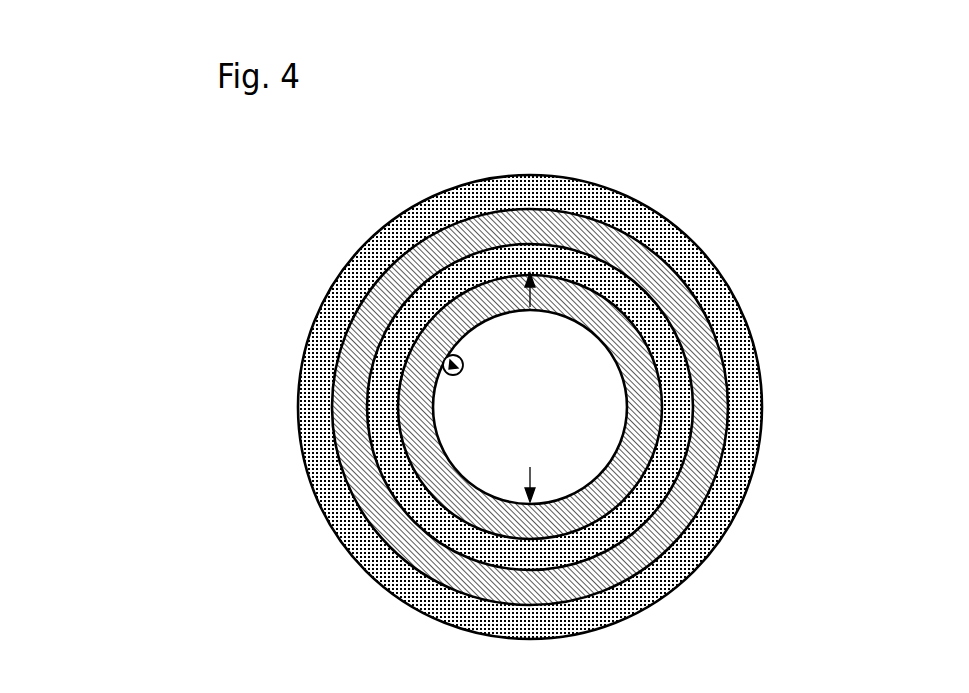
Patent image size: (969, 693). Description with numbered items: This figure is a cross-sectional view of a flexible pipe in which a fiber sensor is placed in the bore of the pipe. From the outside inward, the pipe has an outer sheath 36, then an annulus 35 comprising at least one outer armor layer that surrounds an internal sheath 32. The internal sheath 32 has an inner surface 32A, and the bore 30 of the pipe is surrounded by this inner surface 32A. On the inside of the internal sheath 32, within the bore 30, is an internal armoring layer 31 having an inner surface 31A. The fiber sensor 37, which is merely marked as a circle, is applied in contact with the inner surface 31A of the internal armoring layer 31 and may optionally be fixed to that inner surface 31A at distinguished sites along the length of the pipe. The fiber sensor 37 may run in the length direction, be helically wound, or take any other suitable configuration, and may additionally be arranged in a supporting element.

The bore 30 is at (498, 408).
The internal armoring layer 31 is at (639, 469).
The inner surface of the internal armoring layer 31A is at (535, 467).
The internal sheath 32 is at (685, 438).
The inner surface of the internal sheath 32A is at (535, 320).
The annulus 35 is at (707, 346).
The outer sheath 36 is at (709, 230).
The fiber sensor 37 is at (446, 358).